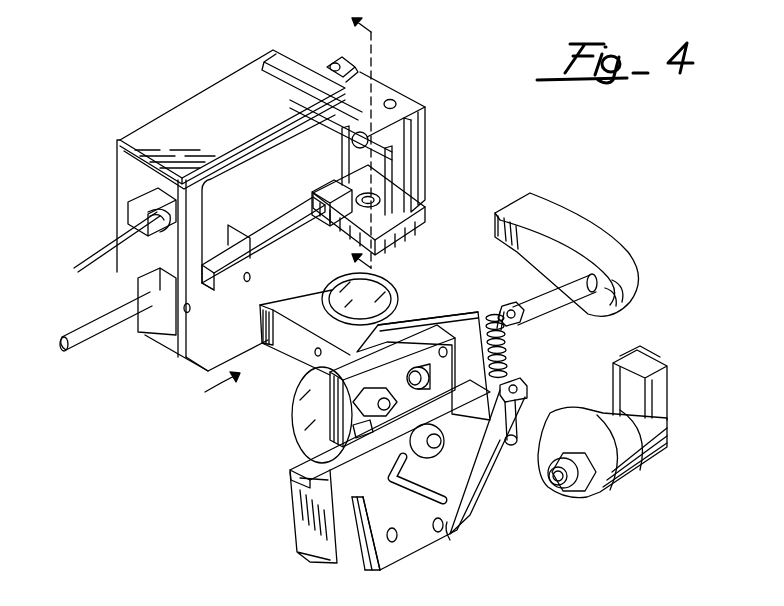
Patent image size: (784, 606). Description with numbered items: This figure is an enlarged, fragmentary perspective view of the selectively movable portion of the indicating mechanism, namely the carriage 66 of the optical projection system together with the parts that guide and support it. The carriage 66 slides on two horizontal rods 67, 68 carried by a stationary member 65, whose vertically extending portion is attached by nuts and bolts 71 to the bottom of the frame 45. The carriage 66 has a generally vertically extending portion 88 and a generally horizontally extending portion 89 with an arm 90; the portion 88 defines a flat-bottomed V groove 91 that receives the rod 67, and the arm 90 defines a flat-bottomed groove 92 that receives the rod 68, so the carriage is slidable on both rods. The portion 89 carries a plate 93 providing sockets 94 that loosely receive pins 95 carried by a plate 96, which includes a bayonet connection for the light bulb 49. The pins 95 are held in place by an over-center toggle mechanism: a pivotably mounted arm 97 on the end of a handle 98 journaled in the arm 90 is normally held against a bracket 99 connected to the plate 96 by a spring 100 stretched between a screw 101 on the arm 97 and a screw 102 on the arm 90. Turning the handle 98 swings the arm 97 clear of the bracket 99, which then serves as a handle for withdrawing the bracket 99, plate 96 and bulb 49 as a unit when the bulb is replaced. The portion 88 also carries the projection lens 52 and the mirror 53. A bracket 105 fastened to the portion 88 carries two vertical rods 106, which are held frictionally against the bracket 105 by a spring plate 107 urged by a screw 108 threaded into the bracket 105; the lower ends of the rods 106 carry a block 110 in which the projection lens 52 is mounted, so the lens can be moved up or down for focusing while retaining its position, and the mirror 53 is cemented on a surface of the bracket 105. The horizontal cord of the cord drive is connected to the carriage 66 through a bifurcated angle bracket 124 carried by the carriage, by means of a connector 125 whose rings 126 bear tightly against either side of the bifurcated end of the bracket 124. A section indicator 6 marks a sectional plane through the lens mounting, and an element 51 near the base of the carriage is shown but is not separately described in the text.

The generally vertically extending carriage portion 88 is at (148, 122).
The mirror 53 is at (327, 187).
The projection lens 52 is at (349, 229).
The screw 108 is at (330, 98).
The bracket 105 is at (336, 60).
The spring plate 107 is at (418, 163).
The vertical rods 106 is at (337, 170).
The block 110 is at (424, 213).
The section line 6 is at (373, 147).
The bifurcated angle bracket 124 is at (130, 198).
The rings 126 is at (142, 215).
The connector 125 is at (120, 240).
The flat-bottomed V groove 91 is at (152, 305).
The horizontal rod 67 is at (70, 335).
The carriage 66 is at (201, 390).
The support bar 51 is at (318, 298).
The generally horizontally extending carriage portion 89 is at (416, 308).
The flat-bottomed groove 92 is at (420, 352).
The plate 93 is at (330, 405).
The sockets 94 is at (355, 428).
The light bulb 49 is at (296, 442).
The carriage arm 90 is at (390, 446).
The pins 95 is at (340, 460).
The plate 96 is at (400, 557).
The bracket 99 is at (303, 553).
The pivotably mounted arm 97 is at (478, 485).
The handle 98 is at (445, 506).
The screw 101 is at (512, 447).
The spring 100 is at (512, 362).
The screw 102 is at (510, 305).
The horizontal rod 68 is at (553, 322).
The stationary member 65 is at (560, 212).
The frame 45 is at (668, 382).
The nuts and bolts 71 is at (563, 490).